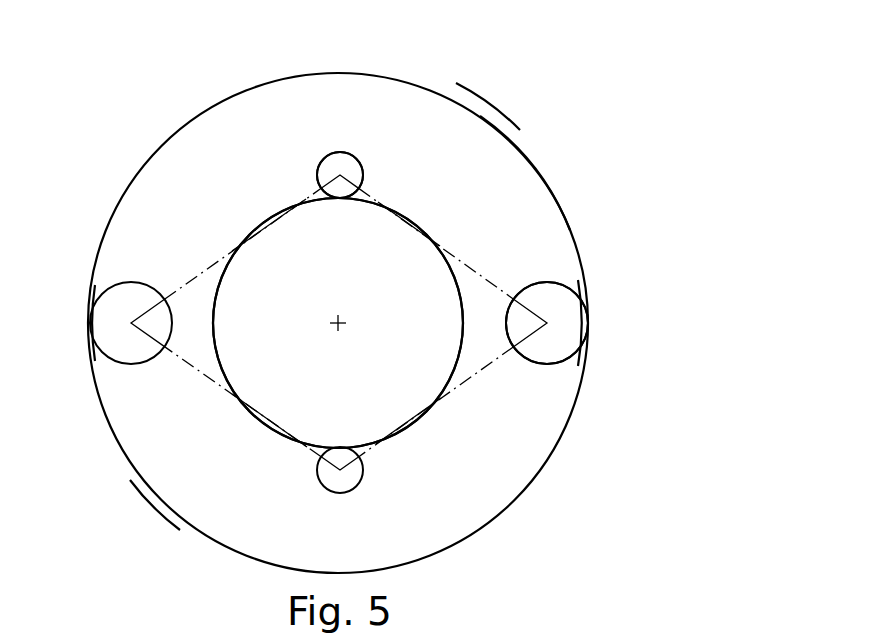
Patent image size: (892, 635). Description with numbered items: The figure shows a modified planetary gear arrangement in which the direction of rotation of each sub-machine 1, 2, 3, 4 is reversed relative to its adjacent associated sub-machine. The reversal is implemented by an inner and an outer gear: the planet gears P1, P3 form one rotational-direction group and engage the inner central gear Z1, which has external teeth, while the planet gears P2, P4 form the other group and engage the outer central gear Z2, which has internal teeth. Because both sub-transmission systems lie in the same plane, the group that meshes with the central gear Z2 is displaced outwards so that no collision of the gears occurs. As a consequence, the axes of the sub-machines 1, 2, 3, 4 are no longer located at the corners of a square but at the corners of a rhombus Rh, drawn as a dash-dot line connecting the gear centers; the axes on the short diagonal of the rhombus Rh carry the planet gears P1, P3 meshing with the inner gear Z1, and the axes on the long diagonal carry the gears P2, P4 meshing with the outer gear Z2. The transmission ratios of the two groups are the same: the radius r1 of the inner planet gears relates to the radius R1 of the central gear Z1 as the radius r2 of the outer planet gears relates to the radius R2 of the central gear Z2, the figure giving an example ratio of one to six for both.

The sub-machine 1 is at (175, 128).
The sub-machine 2 is at (596, 340).
The sub-machine 3 is at (152, 502).
The sub-machine 4 is at (92, 313).
The central gear with external teeth Z1 is at (215, 322).
The central gear with internal teeth Z2 is at (483, 118).
The radius of the inner central gear R1 is at (338, 323).
The radius of the outer central gear R2 is at (338, 323).
The radius of the inner planet gear r1 is at (340, 175).
The radius of the outer planet gear r2 is at (547, 323).
The rhombus Rh is at (192, 280).
The planet gear P1 is at (358, 480).
The planet gear P2 is at (548, 282).
The planet gear P3 is at (362, 171).
The planet gear P4 is at (145, 363).